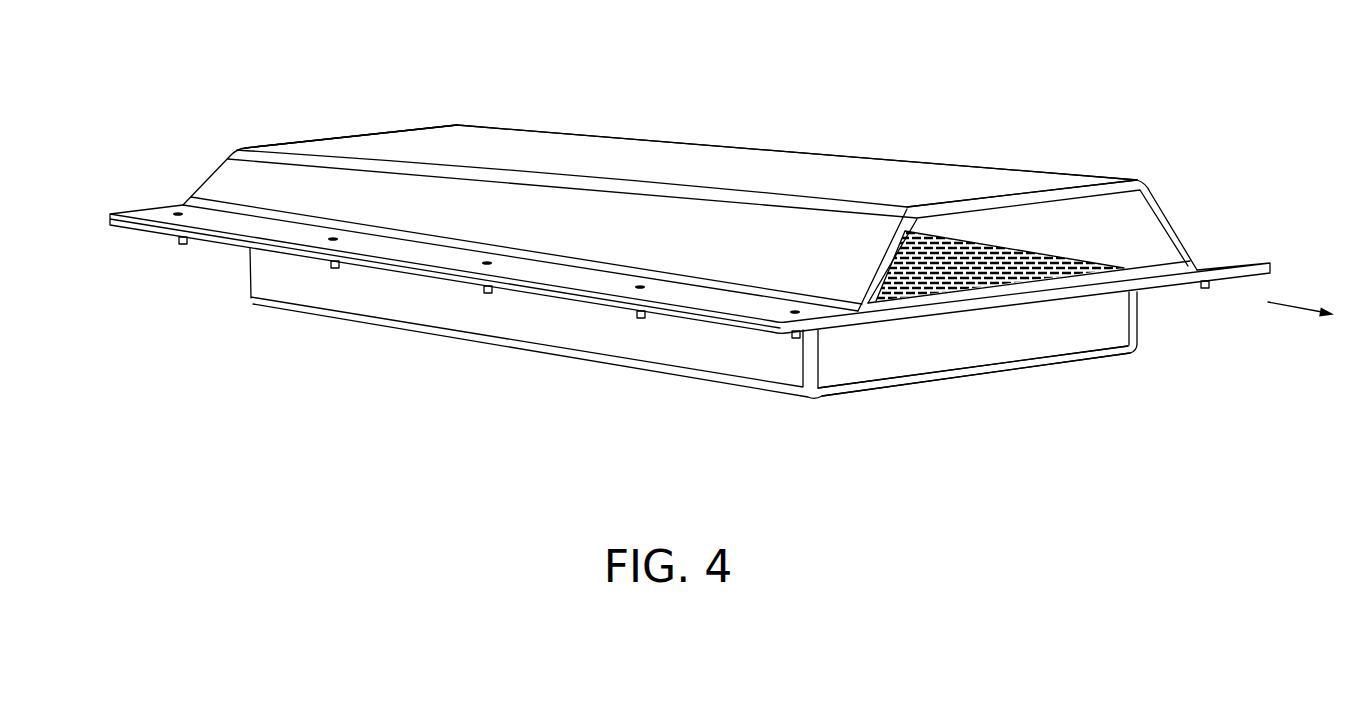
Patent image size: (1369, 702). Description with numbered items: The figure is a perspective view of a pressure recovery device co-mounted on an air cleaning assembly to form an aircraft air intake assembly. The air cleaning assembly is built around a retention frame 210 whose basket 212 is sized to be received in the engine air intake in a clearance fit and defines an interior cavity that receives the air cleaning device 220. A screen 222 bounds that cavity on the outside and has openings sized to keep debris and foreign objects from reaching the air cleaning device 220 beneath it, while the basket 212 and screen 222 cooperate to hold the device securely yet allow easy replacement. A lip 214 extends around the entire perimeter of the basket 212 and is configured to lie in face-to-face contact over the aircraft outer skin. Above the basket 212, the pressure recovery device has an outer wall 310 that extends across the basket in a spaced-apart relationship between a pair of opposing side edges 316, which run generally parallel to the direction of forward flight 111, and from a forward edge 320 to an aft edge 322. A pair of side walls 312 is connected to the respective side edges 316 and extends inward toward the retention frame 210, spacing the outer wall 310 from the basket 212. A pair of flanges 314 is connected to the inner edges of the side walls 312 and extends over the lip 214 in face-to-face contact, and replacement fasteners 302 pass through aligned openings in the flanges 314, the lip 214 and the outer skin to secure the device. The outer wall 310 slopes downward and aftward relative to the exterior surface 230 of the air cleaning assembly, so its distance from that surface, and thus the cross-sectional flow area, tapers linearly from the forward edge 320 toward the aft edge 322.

The direction of forward flight 111 is at (1268, 302).
The retention frame 210 is at (530, 357).
The basket 212 is at (973, 350).
The lip 214 is at (117, 225).
The air cleaning device 220 is at (867, 374).
The screen 222 is at (1071, 307).
The exterior surface 230 is at (945, 256).
The replacement fasteners 302 is at (487, 291).
The outer wall 310 is at (552, 150).
The side walls 312 is at (237, 183).
The flanges 314 is at (122, 212).
The side edges 316 is at (447, 157).
The forward edge 320 is at (988, 197).
The aft edge 322 is at (350, 136).